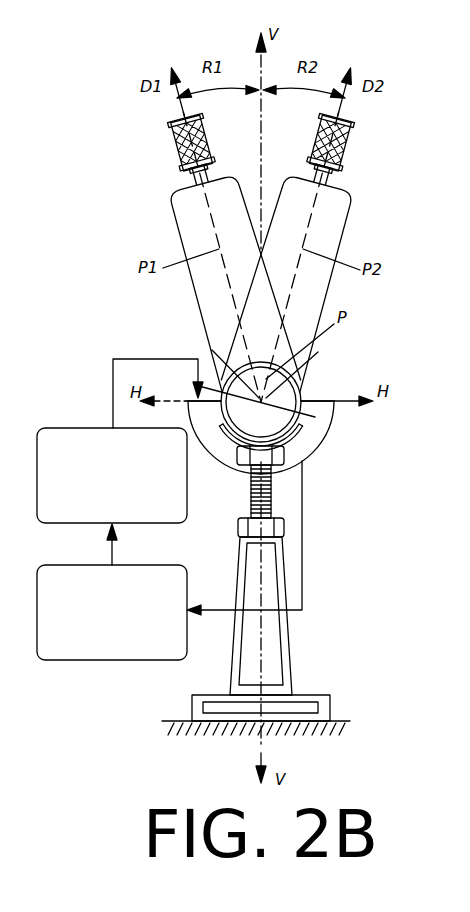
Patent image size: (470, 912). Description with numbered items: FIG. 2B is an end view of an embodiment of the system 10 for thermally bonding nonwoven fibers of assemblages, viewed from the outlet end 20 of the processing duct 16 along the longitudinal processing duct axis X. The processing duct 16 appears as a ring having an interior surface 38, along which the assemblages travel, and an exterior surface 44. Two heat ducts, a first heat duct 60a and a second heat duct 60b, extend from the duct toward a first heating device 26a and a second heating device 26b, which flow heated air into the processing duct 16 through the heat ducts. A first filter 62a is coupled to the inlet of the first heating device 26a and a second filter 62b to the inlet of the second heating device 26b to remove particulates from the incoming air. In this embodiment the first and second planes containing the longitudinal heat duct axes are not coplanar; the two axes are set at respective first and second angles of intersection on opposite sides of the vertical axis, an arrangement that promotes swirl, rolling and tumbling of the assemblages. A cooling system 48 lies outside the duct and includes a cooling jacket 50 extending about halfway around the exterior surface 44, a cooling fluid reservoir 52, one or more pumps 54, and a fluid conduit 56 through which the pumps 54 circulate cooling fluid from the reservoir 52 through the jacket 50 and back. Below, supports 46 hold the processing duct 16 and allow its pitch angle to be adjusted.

The system 10 is at (122, 68).
The processing duct 16 is at (303, 388).
The outlet end 20 is at (284, 447).
The first heating device 26a is at (180, 186).
The second heating device 26b is at (343, 186).
The interior surface 38 is at (318, 352).
The exterior surface 44 is at (206, 341).
The supports 46 is at (250, 662).
The cooling system 48 is at (332, 476).
The cooling jacket 50 is at (308, 430).
The cooling fluid reservoir 52 is at (112, 612).
The pumps 54 is at (112, 475).
The fluid conduit 56 is at (113, 357).
The first heat duct 60a is at (218, 292).
The second heat duct 60b is at (305, 292).
The first filter 62a is at (166, 142).
The second filter 62b is at (354, 142).